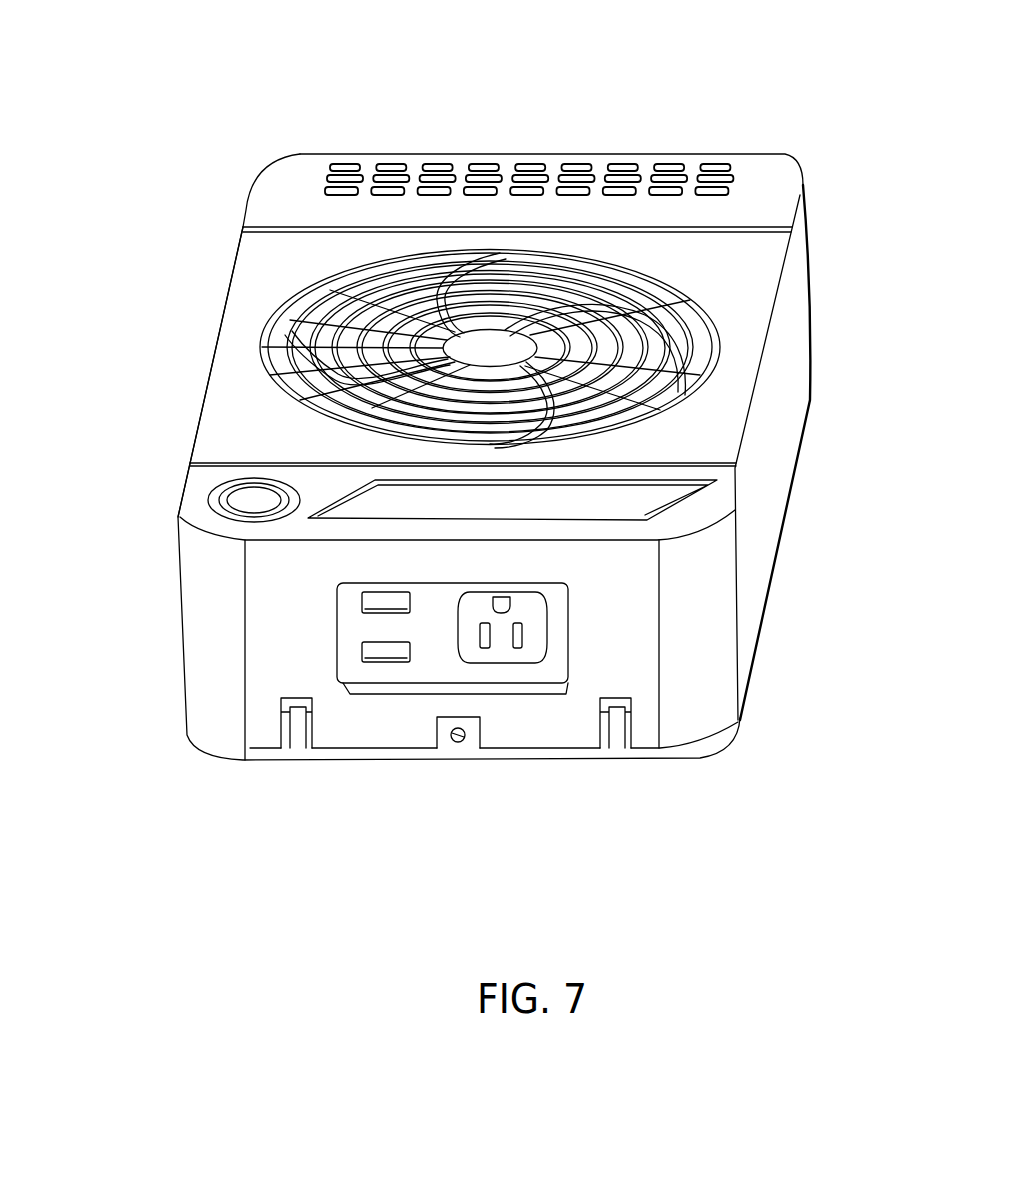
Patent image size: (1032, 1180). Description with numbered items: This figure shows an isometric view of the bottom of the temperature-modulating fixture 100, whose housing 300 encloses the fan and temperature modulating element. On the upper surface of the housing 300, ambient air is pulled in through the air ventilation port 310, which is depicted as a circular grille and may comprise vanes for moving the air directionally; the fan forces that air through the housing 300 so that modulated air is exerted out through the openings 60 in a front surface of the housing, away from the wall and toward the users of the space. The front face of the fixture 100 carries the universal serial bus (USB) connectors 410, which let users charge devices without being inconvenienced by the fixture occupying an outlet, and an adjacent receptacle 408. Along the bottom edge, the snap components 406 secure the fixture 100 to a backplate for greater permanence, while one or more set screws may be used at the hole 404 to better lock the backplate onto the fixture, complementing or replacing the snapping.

The fixture 100 is at (825, 128).
The openings 60 is at (340, 175).
The housing 300 is at (233, 267).
The air ventilation port 310 is at (700, 291).
The universal serial bus (USB) connectors 410 is at (362, 650).
The AC outlet 408 is at (547, 613).
The snap components 406 is at (313, 720).
The hole 404 is at (458, 745).